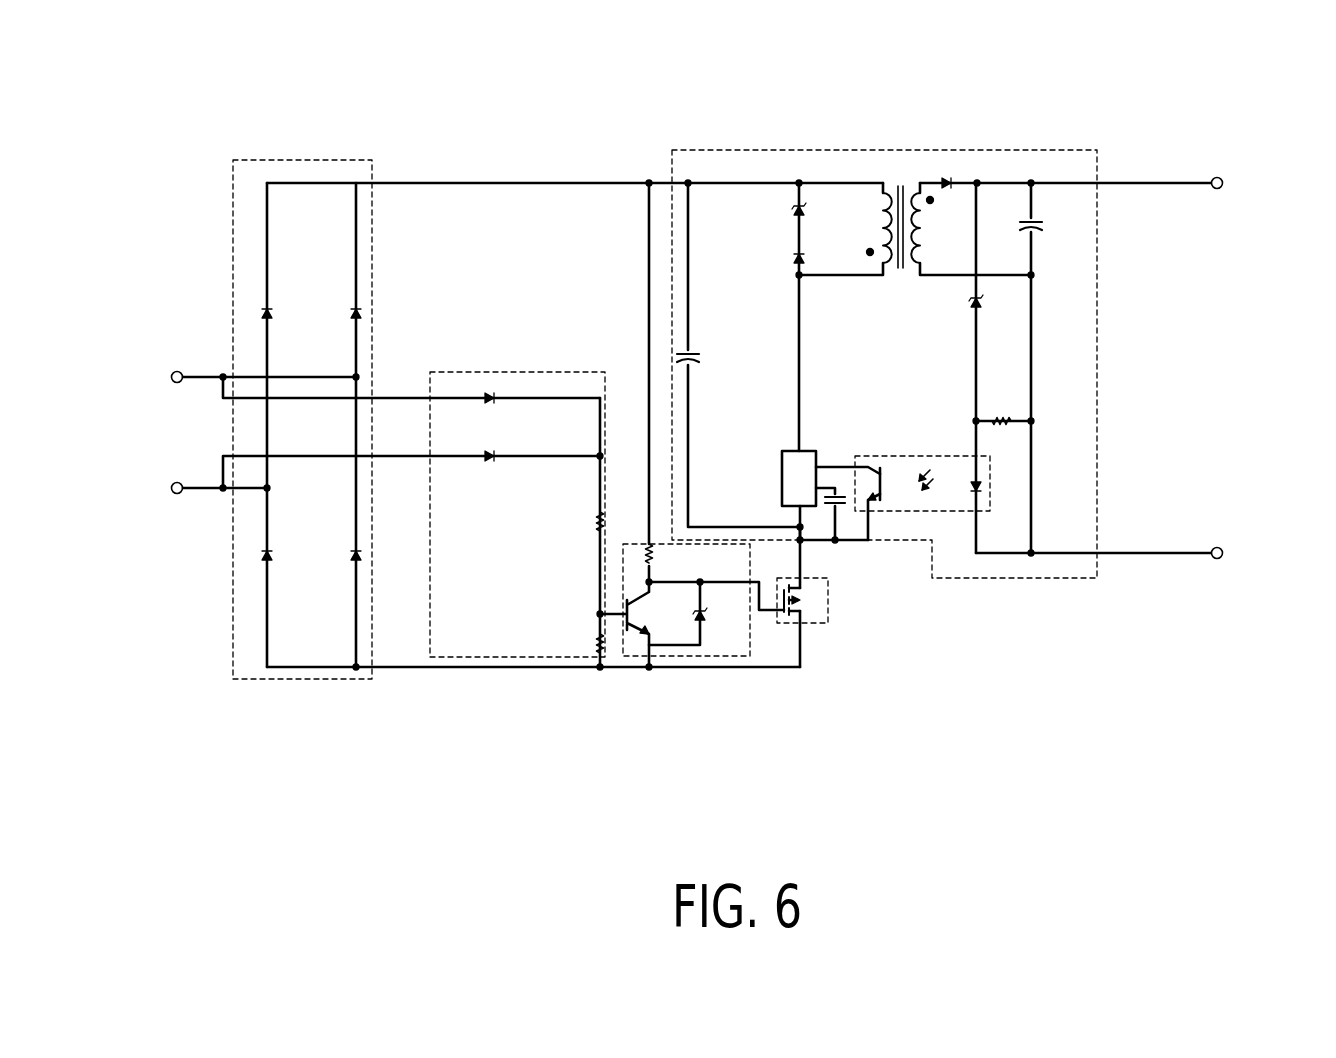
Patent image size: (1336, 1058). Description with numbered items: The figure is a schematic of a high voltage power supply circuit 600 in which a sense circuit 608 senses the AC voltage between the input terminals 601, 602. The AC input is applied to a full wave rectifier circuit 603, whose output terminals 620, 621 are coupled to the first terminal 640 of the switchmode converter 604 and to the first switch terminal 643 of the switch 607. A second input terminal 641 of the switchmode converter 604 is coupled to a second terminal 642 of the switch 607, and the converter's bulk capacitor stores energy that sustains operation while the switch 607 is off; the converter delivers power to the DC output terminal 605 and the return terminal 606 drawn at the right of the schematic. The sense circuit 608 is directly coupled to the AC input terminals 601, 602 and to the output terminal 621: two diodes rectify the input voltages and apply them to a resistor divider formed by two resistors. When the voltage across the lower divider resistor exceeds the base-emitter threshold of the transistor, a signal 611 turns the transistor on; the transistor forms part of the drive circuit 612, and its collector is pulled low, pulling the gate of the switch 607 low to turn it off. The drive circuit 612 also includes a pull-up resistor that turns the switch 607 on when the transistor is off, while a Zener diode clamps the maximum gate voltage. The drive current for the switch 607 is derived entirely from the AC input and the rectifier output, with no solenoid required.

The power supply circuit 600 is at (218, 64).
The input terminal 601 is at (170, 373).
The input terminal 602 is at (170, 485).
The rectifier circuit 603 is at (233, 578).
The switchmode converter 604 is at (878, 340).
The DC output terminal 605 is at (1225, 191).
The return terminal 606 is at (1225, 562).
The switch 607 is at (833, 600).
The sense circuit 608 is at (440, 360).
The signal 611 is at (617, 622).
The drive circuit 612 is at (697, 637).
The output terminal 620 is at (400, 185).
The output terminal 621 is at (385, 667).
The first terminal 640 is at (660, 181).
The second input terminal 641 is at (803, 543).
The second terminal 642 is at (803, 563).
The first switch terminal 643 is at (805, 628).